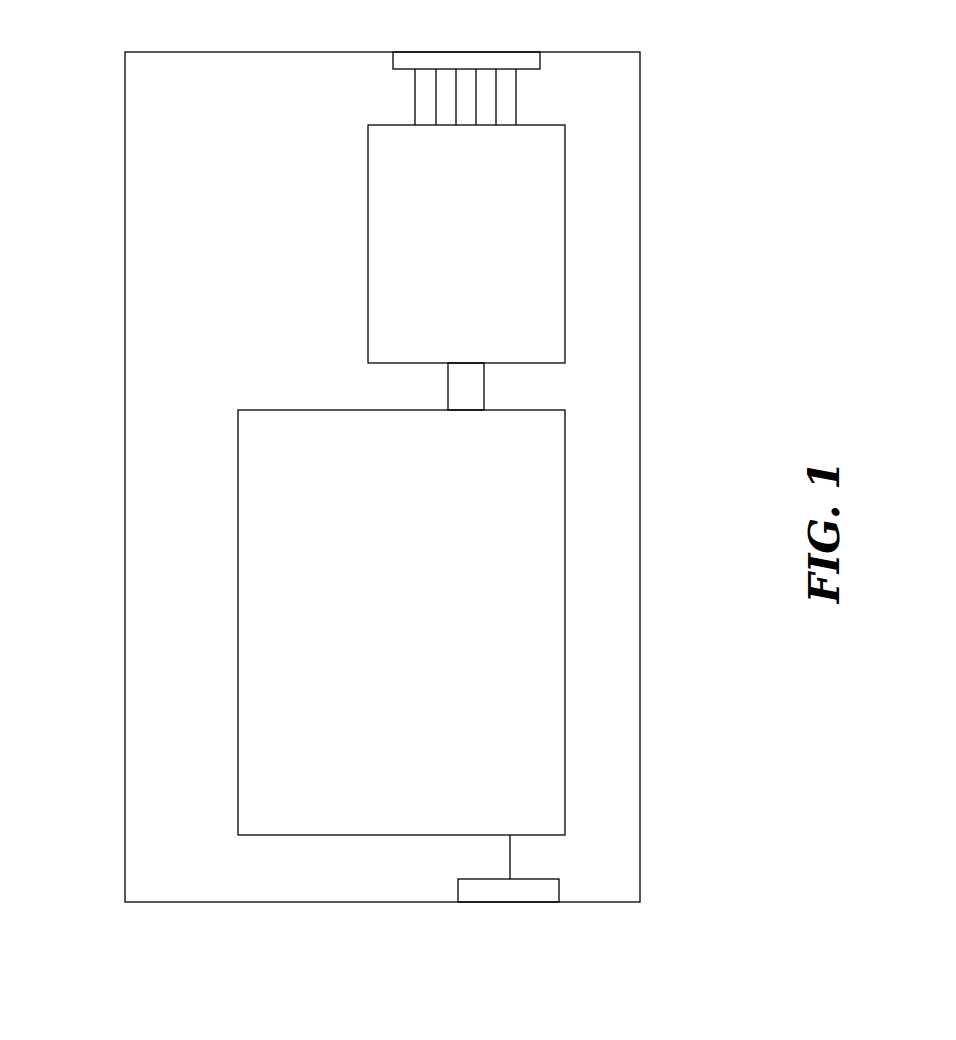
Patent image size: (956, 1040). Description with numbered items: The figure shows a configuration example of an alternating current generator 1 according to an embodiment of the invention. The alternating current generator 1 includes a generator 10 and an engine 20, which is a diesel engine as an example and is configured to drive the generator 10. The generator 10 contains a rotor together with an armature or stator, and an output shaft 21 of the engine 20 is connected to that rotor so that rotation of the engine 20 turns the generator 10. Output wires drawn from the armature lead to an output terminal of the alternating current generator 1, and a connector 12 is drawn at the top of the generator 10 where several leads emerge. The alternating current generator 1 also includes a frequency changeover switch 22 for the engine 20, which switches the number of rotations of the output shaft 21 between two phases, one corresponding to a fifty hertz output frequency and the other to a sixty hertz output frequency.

The alternating current generator 1 is at (100, 360).
The generator 10 is at (368, 243).
The connector 12 is at (394, 62).
The engine 20 is at (238, 680).
The output shaft 21 is at (484, 386).
The frequency changeover switch 22 is at (560, 893).